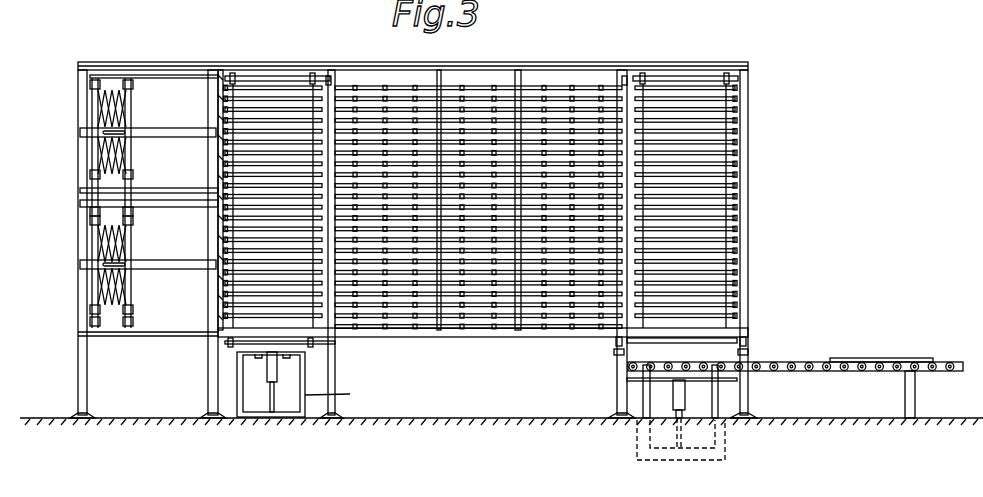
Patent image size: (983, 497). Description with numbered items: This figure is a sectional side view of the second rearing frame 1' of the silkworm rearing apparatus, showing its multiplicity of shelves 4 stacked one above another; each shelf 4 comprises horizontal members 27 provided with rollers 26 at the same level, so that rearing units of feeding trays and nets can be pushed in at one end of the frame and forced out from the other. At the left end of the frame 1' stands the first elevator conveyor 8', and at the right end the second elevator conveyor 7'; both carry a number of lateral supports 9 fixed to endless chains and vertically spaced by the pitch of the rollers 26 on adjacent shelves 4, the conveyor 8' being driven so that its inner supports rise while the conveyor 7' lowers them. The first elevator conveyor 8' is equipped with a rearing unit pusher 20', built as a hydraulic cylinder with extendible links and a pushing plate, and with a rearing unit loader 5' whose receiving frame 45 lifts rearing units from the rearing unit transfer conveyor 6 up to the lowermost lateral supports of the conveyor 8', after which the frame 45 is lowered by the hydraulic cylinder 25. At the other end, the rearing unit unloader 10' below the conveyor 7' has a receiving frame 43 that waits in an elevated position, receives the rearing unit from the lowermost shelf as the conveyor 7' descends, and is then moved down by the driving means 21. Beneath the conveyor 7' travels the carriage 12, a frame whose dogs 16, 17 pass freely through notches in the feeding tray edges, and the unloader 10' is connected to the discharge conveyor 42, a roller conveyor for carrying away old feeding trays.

The second rearing frame 1' is at (413, 221).
The shelf 4 is at (366, 85).
The first elevator conveyor 8' is at (277, 172).
The second elevator conveyor 7' is at (685, 168).
The lateral support 9 is at (668, 98).
The rearing unit pusher 20' is at (126, 201).
The rearing unit transfer conveyor 6 is at (225, 342).
The hydraulic cylinder 25 is at (277, 380).
The receiving frame 45 is at (240, 420).
The rearing unit loader 5' is at (337, 393).
The roller 26 is at (410, 300).
The horizontal member 27 is at (490, 300).
The carriage 12 is at (616, 340).
The dog 16 is at (635, 346).
The dog 17 is at (735, 343).
The discharge conveyor 42 is at (800, 360).
The rearing unit unloader 10' is at (716, 391).
The driving means 21 is at (683, 398).
The receiving frame 43 is at (645, 402).